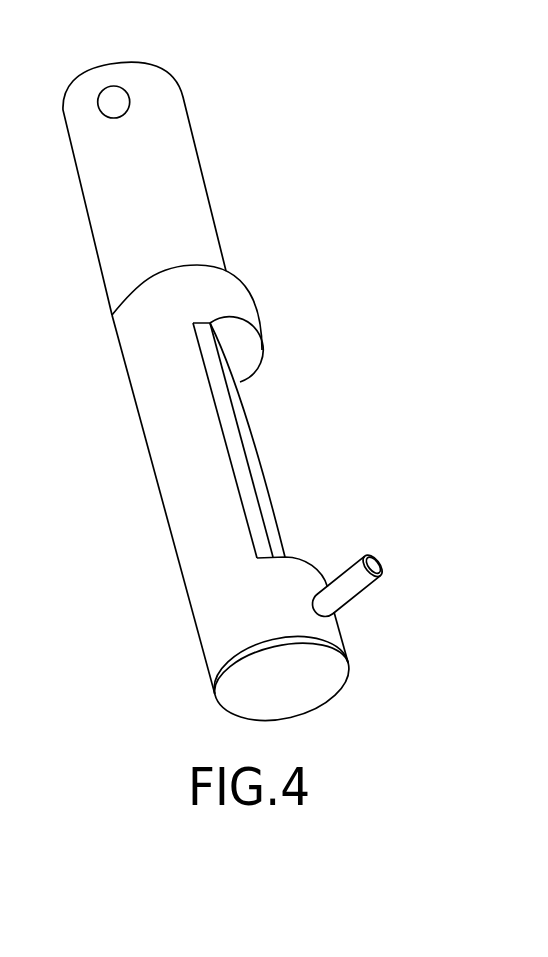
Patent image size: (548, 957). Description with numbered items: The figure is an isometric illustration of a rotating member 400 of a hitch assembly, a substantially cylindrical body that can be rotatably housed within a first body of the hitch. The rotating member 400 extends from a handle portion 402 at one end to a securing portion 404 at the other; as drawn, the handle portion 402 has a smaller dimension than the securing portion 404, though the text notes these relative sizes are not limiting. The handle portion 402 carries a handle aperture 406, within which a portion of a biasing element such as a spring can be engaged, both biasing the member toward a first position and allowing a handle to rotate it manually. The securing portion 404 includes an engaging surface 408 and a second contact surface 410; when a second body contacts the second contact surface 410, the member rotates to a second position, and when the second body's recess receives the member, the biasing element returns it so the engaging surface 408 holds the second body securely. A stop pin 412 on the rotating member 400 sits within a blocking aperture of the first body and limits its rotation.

The rotating member 400 is at (300, 212).
The handle portion 402 is at (177, 183).
The securing portion 404 is at (215, 643).
The handle aperture 406 is at (116, 100).
The engaging surface 408 is at (138, 506).
The second contact surface 410 is at (289, 457).
The stop pin 412 is at (362, 584).